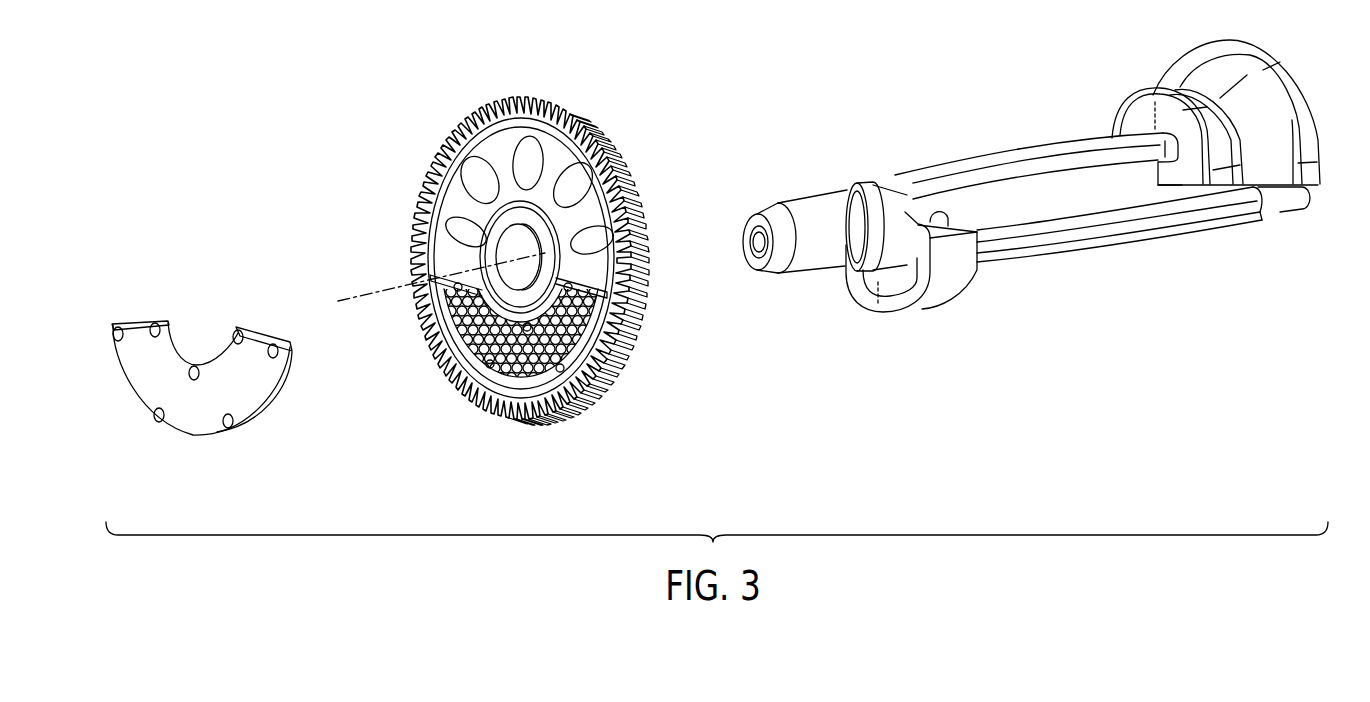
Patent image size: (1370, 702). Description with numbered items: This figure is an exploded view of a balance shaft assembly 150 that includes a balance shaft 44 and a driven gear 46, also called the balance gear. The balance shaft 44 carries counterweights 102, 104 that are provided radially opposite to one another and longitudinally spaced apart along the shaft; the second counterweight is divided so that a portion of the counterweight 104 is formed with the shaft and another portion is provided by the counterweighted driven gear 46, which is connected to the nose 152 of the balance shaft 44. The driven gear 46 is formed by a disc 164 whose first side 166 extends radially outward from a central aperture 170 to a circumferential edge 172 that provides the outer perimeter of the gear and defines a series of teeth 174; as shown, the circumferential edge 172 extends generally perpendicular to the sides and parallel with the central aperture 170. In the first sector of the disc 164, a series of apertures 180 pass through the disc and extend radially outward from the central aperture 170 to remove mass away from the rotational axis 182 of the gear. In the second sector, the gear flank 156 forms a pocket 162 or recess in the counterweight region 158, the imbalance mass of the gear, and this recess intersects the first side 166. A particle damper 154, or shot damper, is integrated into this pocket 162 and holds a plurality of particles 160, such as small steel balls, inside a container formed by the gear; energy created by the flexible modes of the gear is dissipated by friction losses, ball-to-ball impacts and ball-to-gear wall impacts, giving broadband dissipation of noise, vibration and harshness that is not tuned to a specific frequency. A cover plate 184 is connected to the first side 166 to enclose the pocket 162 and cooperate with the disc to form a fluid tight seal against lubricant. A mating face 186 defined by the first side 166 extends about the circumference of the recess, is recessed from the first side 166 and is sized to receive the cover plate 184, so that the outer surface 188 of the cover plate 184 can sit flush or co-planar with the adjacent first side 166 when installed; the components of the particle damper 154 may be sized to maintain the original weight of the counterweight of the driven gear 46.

The balance shaft 44 is at (1055, 287).
The driven gear 46 is at (630, 126).
The counterweight 102 is at (1283, 118).
The counterweight 104 is at (947, 277).
The balance shaft assembly 150 is at (929, 328).
The nose 152 is at (800, 265).
The particle damper 154 is at (551, 447).
The flank 156 is at (441, 251).
The counterweight region 158 is at (468, 355).
The particles 160 is at (453, 323).
The pocket 162 is at (590, 368).
The disc 164 is at (462, 182).
The first side 166 is at (512, 110).
The central aperture 170 is at (517, 233).
The circumferential edge 172 is at (633, 190).
The teeth 174 is at (614, 269).
The apertures 180 is at (560, 183).
The rotational axis 182 is at (363, 282).
The cover plate 184 is at (253, 332).
The mating face 186 is at (595, 285).
The outer surface 188 is at (247, 403).